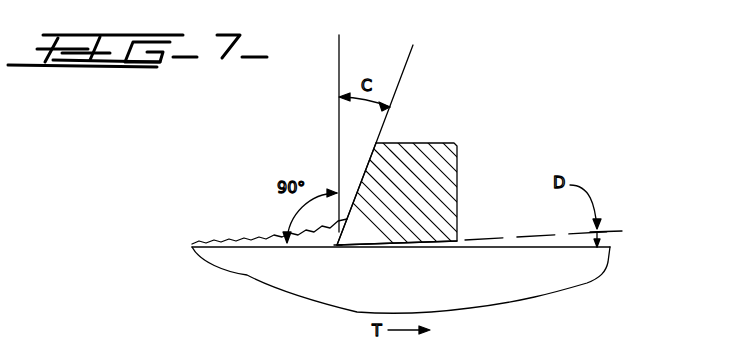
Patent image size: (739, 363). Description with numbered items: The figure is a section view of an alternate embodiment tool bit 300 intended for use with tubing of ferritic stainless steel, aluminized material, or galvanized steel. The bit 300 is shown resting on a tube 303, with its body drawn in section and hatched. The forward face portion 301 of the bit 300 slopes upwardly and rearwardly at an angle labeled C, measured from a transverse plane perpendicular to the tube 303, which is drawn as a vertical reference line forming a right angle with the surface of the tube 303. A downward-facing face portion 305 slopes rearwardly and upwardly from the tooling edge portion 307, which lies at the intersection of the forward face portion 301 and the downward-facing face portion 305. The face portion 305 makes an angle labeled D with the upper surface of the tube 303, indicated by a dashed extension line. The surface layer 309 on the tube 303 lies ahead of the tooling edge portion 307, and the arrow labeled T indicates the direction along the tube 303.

The tool bit 300 is at (441, 168).
The forward face portion 301 is at (355, 200).
The tube 303 is at (250, 265).
The downward-facing face portion 305 is at (416, 248).
The tooling edge portion 307 is at (337, 248).
The machined surface layer / chip 309 is at (247, 243).